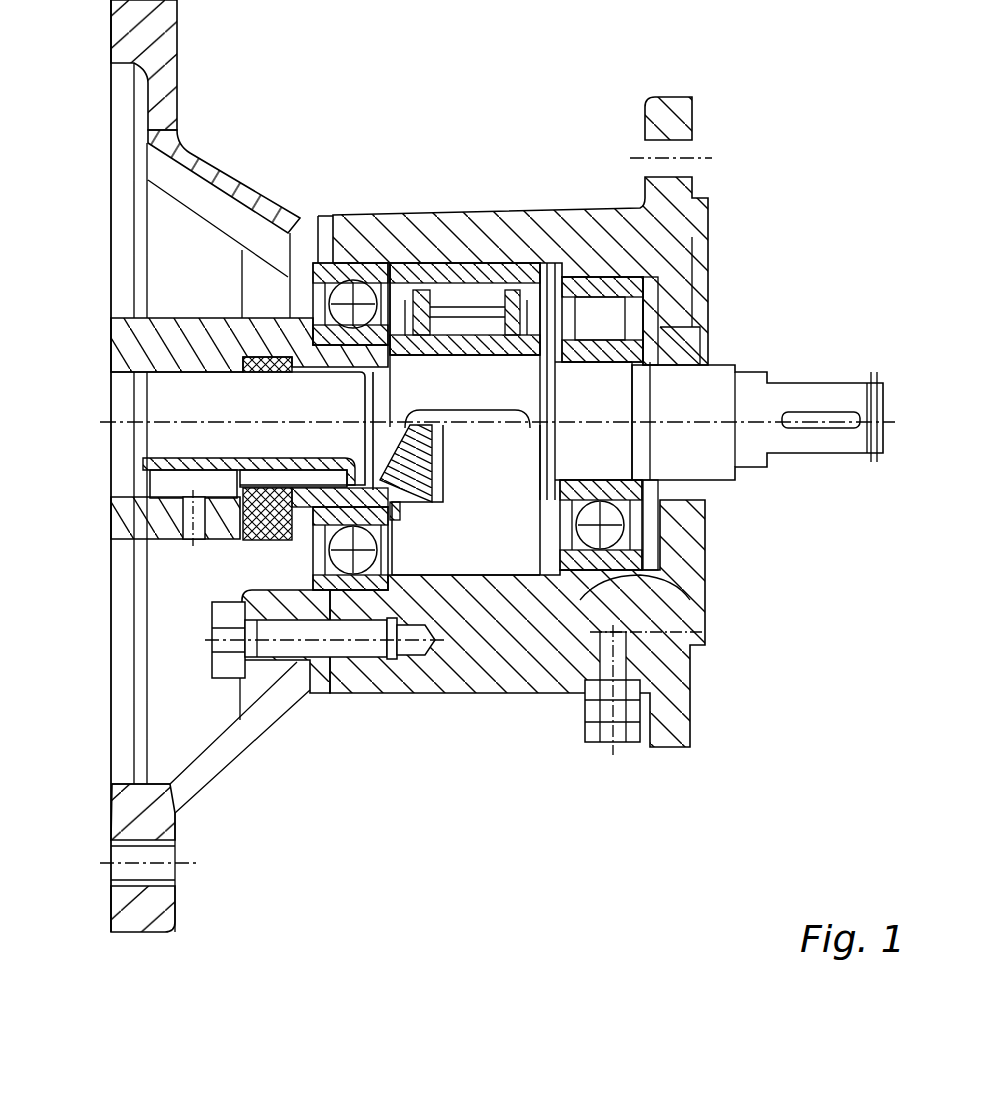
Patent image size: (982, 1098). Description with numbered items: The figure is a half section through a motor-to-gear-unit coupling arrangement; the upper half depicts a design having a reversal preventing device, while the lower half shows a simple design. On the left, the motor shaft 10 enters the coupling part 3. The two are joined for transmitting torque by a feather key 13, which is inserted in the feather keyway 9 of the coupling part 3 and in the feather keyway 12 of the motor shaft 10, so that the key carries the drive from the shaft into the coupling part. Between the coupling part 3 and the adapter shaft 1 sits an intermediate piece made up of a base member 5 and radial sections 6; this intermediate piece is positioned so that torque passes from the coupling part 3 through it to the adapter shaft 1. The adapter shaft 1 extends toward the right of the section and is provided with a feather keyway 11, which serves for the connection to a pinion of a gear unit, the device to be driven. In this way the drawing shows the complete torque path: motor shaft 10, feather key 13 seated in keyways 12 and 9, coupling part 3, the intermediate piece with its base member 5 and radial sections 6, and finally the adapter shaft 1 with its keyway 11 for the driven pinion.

The adapter shaft 1 is at (453, 390).
The coupling part 3 is at (137, 527).
The base member 5 is at (290, 340).
The radial sections 6 is at (277, 543).
The feather keyway 9 is at (118, 493).
The motor shaft 10 is at (140, 406).
The feather keyway 11 is at (805, 425).
The feather keyway 12 is at (133, 465).
The feather key 13 is at (167, 483).